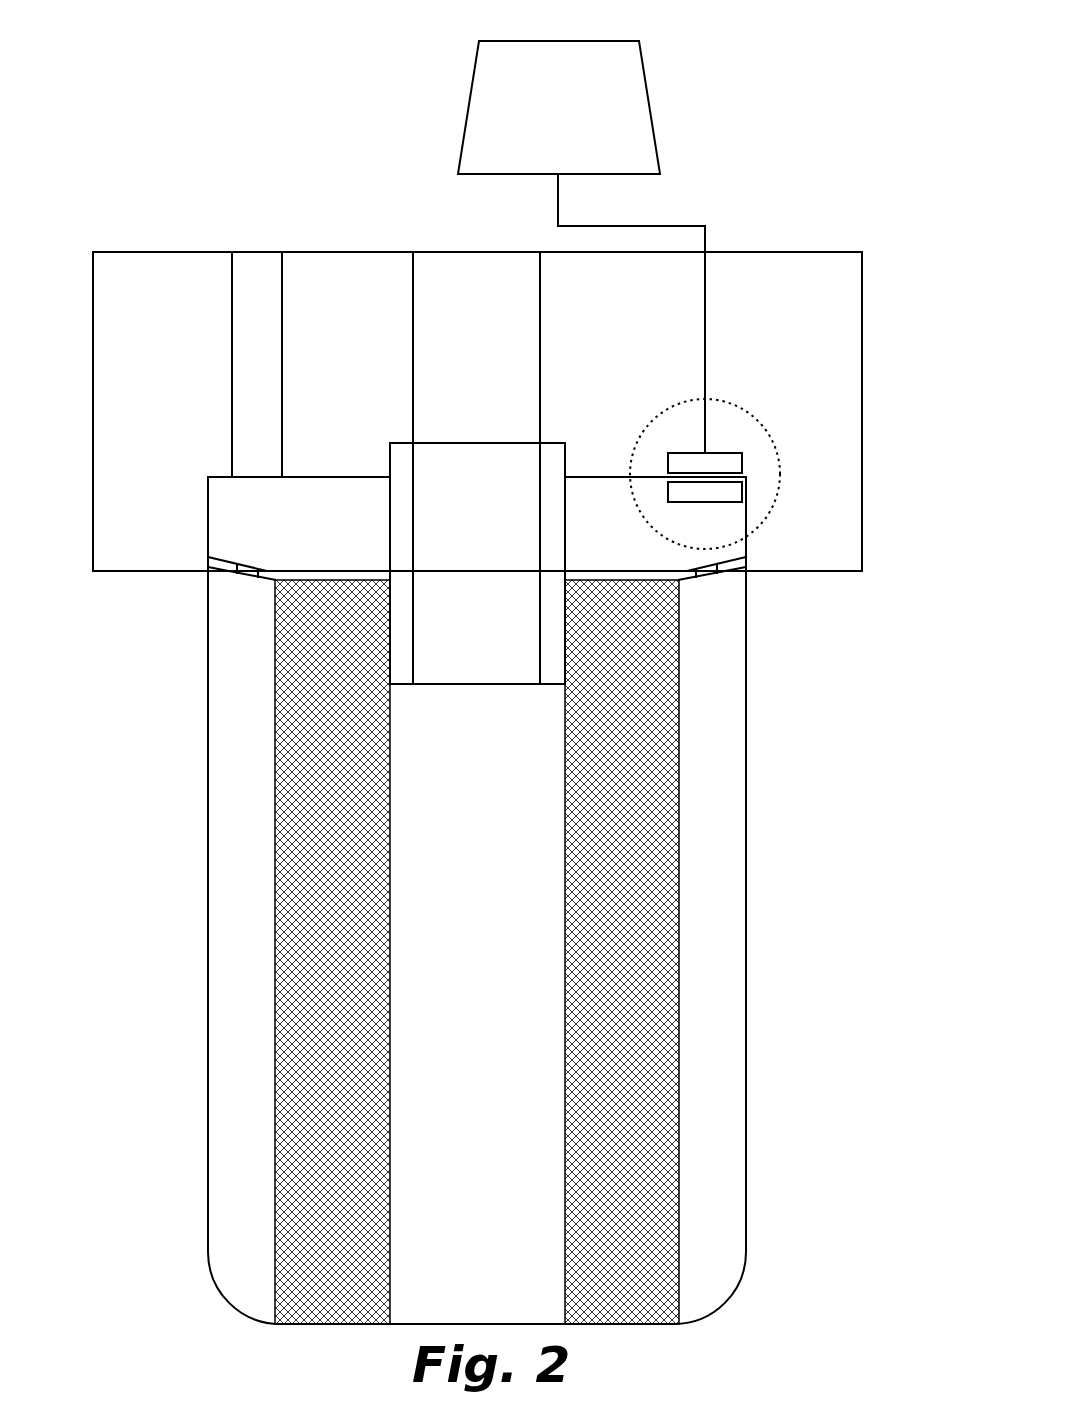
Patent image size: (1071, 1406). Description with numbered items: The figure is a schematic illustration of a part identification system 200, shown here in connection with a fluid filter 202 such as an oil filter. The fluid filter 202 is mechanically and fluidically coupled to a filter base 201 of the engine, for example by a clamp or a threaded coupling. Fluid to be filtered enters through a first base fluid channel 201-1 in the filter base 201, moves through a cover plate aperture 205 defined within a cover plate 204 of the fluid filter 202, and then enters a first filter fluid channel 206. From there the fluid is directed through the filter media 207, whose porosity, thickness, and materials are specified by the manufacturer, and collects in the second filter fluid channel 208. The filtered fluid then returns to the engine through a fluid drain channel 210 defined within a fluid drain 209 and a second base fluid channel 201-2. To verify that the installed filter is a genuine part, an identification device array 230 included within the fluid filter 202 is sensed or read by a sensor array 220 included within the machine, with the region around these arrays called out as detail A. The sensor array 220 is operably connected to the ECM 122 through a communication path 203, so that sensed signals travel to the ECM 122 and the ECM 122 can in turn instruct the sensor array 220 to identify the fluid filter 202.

The part identification system 200 is at (151, 82).
The filter base 201 is at (350, 296).
The first base fluid channel 201-1 is at (258, 278).
The second base fluid channel 201-2 is at (452, 288).
The ECM 122 is at (559, 107).
The communication path 203 is at (706, 331).
The sensor array 220 is at (723, 465).
The identification device array 230 is at (723, 495).
The detail region A is at (758, 530).
The fluid filter 202 is at (208, 912).
The cover plate 204 is at (227, 566).
The cover plate aperture 205 is at (244, 588).
The first filter fluid channel 206 is at (243, 1032).
The filter media 207 is at (307, 1115).
The second filter fluid channel 208 is at (454, 1228).
The fluid drain 209 is at (553, 637).
The fluid drain channel 210 is at (480, 665).